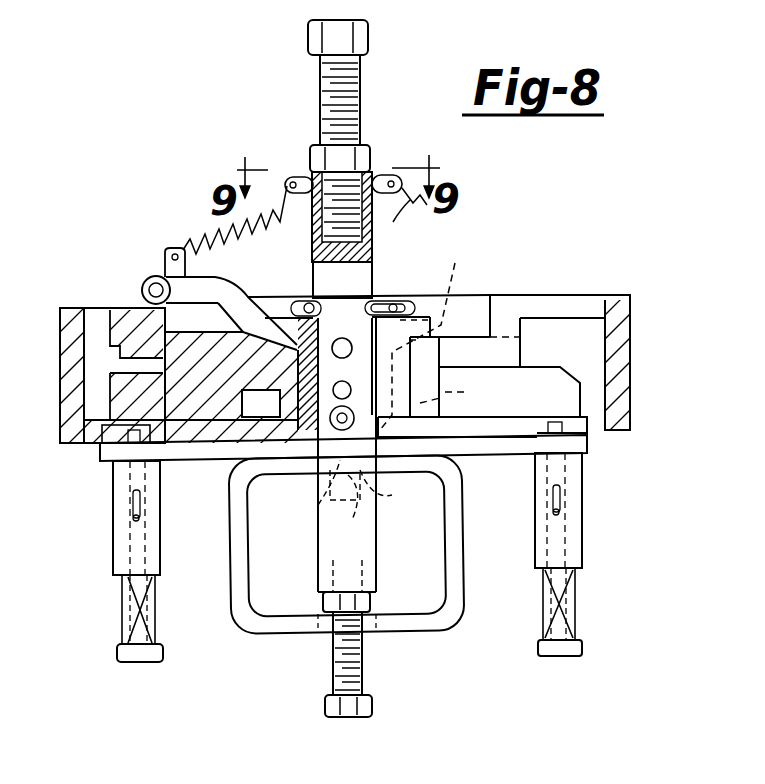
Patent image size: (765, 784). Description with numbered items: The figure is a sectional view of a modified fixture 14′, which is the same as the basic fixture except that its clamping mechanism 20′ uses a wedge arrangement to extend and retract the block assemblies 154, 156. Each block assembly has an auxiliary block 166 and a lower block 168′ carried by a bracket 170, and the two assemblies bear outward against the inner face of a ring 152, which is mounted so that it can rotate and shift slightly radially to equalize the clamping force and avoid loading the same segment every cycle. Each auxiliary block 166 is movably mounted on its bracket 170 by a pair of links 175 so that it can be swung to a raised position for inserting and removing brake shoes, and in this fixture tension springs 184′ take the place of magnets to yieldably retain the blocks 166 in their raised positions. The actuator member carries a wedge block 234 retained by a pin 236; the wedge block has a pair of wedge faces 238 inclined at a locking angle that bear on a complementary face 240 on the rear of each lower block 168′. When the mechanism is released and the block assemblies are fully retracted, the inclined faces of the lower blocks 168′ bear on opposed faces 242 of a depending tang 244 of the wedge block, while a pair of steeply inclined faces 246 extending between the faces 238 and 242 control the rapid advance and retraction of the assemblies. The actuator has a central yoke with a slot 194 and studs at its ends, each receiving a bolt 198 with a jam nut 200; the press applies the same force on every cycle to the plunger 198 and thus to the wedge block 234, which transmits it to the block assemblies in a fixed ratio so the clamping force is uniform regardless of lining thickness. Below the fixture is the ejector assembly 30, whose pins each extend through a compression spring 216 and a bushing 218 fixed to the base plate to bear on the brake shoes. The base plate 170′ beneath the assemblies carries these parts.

The bolt 198 is at (306, 38).
The modified fixture 14′ is at (178, 158).
The clamping mechanism 20′ is at (312, 123).
The tension springs 184′ is at (200, 242).
The block assembly 154 is at (121, 304).
The wedge block 234 is at (290, 343).
The links 175 is at (243, 295).
The auxiliary block 166 is at (95, 318).
The wedge faces 238 is at (268, 372).
The pin 236 is at (377, 392).
The complementary face 240 is at (451, 380).
The bracket 170 is at (480, 297).
The block assembly 156 is at (527, 312).
The ring 152 is at (626, 302).
The lower block 168′ is at (592, 395).
The inclined faces 246 is at (285, 500).
The base plate 170′ is at (222, 460).
The opposed faces 242 is at (317, 508).
The slot 194 is at (322, 522).
The depending tang 244 is at (365, 504).
The bushing 218 is at (113, 562).
The ejector assembly 30 is at (163, 540).
The compression spring 216 is at (128, 622).
The jam nut 200 is at (322, 600).